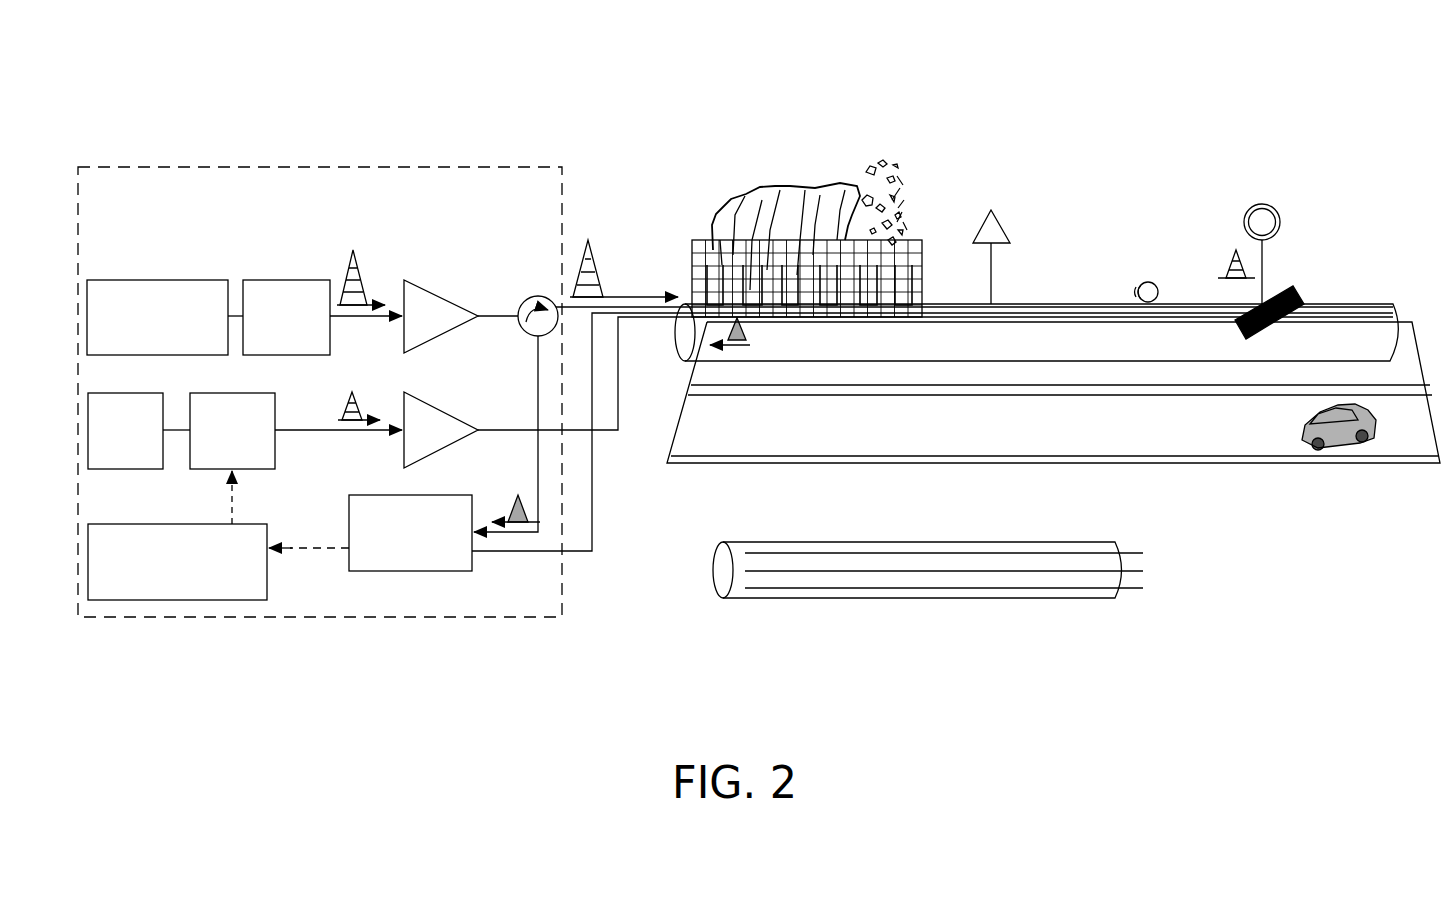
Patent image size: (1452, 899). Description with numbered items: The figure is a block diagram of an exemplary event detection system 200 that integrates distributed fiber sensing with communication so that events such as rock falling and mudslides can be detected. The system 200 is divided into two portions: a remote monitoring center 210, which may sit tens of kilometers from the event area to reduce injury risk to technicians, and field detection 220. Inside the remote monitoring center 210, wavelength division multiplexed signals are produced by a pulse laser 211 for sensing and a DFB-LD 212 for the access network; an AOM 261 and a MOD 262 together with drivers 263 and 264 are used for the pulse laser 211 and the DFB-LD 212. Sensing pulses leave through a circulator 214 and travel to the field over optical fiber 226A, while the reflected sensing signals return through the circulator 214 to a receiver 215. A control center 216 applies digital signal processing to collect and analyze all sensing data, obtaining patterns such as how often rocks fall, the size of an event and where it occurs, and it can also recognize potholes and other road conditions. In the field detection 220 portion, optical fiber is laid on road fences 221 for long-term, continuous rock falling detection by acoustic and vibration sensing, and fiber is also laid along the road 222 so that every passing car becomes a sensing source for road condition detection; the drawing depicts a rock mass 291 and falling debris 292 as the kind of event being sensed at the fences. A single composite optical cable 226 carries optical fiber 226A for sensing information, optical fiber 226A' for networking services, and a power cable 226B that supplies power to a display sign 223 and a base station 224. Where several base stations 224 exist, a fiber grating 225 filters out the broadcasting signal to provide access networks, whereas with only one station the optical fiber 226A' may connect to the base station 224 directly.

The event detection system 200 is at (193, 50).
The remote monitoring center 210 is at (340, 231).
The pulse laser 211 is at (178, 348).
The Distributed Feedback Laser-Laser Diode (DFB-LD) 212 is at (148, 460).
The circulator 214 is at (533, 275).
The receiver 215 is at (431, 561).
The control center 216 is at (198, 591).
The field detection 220 is at (698, 100).
The road fences 221 is at (680, 268).
The road 222 is at (1141, 277).
The display sign 223 is at (989, 202).
The base station 224 is at (1259, 203).
The fiber grating 225 is at (1293, 283).
The optical cable 226 is at (1376, 287).
The optical fiber 226A is at (1065, 569).
The optical fiber 226A' is at (1069, 541).
The power cable 226B is at (1067, 603).
The Acoustic-Optic Modulator (AOM) 261 is at (308, 348).
The Modulator (MOD) 262 is at (254, 460).
The driver 263 is at (455, 328).
The driver 264 is at (455, 441).
The rock mass 291 is at (755, 160).
The falling debris 292 is at (848, 143).